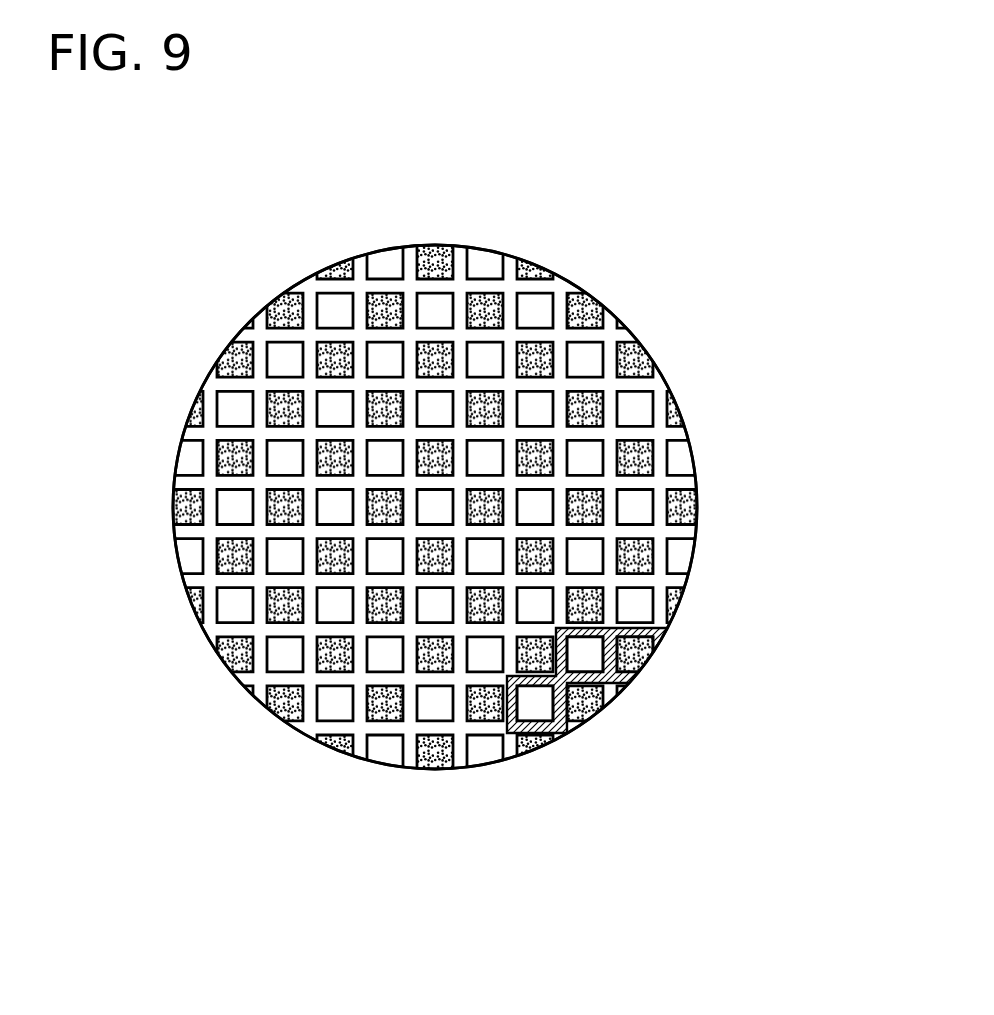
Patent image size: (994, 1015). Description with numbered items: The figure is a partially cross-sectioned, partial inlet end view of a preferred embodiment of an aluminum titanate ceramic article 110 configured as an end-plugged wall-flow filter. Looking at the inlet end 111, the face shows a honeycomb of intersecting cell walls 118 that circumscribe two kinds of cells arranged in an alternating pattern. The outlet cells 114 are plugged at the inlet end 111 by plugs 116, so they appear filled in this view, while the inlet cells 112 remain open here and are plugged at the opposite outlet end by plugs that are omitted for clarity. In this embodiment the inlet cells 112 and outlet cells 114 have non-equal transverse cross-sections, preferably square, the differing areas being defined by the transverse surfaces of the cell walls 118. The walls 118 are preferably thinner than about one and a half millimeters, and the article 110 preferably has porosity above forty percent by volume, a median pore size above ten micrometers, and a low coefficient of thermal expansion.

The ceramic article 110 is at (568, 268).
The inlet end 111 is at (363, 768).
The inlet cells 112 is at (383, 310).
The outlet cells 114 is at (538, 703).
The plugs 116 is at (280, 558).
The cell walls 118 is at (672, 530).